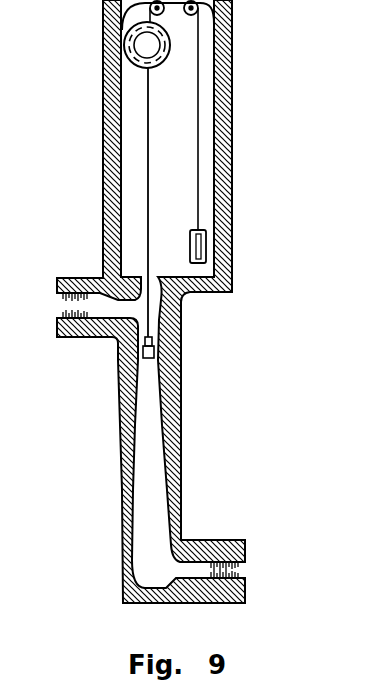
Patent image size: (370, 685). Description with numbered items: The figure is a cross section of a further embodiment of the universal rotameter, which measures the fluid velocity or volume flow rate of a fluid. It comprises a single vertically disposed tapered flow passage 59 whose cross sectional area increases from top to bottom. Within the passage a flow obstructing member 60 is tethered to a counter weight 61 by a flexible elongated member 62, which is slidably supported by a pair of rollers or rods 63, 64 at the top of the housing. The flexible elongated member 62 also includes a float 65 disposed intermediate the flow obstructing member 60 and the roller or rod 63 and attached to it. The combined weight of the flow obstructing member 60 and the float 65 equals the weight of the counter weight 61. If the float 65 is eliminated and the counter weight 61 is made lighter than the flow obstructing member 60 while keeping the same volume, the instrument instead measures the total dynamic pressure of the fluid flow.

The tapered flow passage 59 is at (147, 455).
The flow obstructing member 60 is at (155, 343).
The counter weight 61 is at (207, 247).
The flexible elongated member 62 is at (147, 145).
The roller or rod 63 is at (122, 26).
The roller or rod 64 is at (232, 20).
The float 65 is at (137, 65).